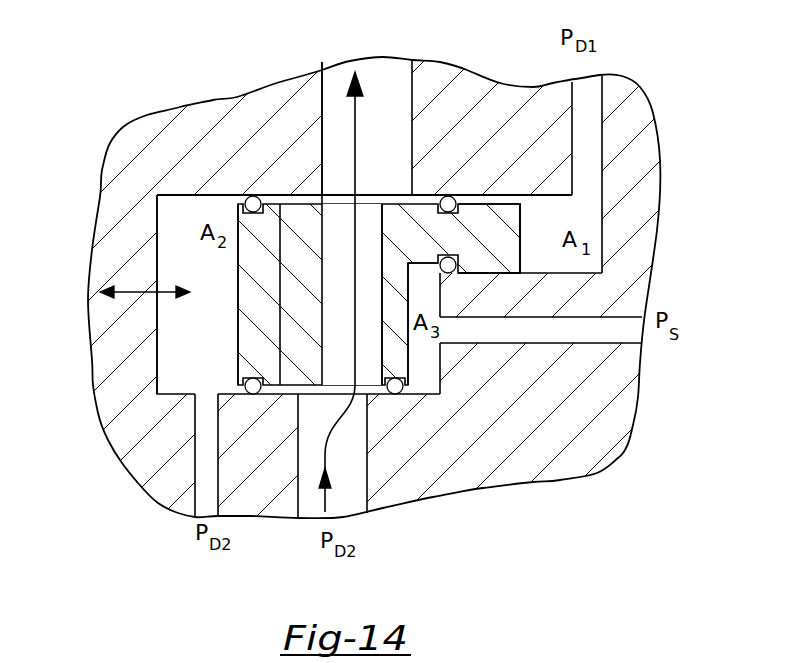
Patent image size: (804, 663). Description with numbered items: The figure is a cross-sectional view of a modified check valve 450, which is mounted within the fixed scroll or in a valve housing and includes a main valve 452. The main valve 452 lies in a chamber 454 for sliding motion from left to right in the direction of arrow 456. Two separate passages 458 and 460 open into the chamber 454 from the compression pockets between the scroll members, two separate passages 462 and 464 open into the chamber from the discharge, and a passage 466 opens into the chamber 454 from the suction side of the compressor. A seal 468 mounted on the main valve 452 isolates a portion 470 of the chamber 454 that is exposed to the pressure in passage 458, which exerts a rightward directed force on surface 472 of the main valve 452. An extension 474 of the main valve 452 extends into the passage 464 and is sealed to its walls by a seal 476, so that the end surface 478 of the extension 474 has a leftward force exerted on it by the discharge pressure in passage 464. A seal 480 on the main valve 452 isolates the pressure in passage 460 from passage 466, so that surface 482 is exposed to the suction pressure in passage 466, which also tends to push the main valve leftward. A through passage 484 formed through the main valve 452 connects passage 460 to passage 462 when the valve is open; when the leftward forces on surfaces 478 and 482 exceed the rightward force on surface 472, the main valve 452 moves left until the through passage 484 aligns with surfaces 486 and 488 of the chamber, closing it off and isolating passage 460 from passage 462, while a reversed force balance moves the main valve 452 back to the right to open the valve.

The check valve 450 is at (229, 98).
The main valve 452 is at (428, 241).
The chamber 454 is at (215, 343).
The arrow 456 is at (135, 292).
The passage 458 is at (207, 498).
The passage 460 is at (347, 495).
The passage 462 is at (390, 86).
The passage 464 is at (587, 108).
The passage 466 is at (552, 331).
The seal 468 is at (249, 197).
The portion of the chamber 470 is at (163, 224).
The surface 472 is at (238, 278).
The extension 474 is at (493, 217).
The seal 476 is at (448, 196).
The end surface 478 is at (521, 223).
The seal 480 is at (396, 395).
The surface 482 is at (410, 357).
The through passage 484 is at (367, 216).
The surface of the chamber 486 is at (292, 195).
The surface of the chamber 488 is at (277, 394).